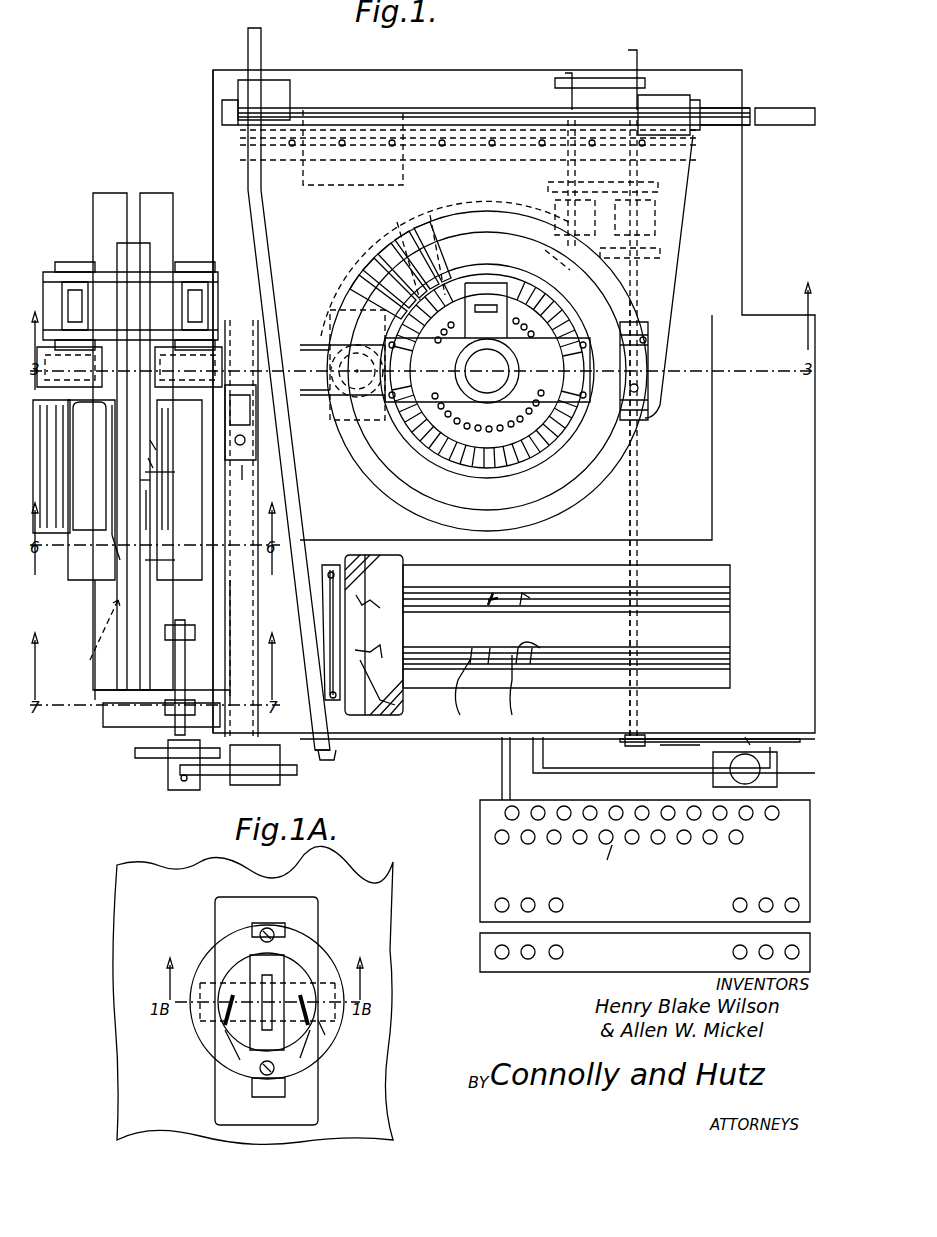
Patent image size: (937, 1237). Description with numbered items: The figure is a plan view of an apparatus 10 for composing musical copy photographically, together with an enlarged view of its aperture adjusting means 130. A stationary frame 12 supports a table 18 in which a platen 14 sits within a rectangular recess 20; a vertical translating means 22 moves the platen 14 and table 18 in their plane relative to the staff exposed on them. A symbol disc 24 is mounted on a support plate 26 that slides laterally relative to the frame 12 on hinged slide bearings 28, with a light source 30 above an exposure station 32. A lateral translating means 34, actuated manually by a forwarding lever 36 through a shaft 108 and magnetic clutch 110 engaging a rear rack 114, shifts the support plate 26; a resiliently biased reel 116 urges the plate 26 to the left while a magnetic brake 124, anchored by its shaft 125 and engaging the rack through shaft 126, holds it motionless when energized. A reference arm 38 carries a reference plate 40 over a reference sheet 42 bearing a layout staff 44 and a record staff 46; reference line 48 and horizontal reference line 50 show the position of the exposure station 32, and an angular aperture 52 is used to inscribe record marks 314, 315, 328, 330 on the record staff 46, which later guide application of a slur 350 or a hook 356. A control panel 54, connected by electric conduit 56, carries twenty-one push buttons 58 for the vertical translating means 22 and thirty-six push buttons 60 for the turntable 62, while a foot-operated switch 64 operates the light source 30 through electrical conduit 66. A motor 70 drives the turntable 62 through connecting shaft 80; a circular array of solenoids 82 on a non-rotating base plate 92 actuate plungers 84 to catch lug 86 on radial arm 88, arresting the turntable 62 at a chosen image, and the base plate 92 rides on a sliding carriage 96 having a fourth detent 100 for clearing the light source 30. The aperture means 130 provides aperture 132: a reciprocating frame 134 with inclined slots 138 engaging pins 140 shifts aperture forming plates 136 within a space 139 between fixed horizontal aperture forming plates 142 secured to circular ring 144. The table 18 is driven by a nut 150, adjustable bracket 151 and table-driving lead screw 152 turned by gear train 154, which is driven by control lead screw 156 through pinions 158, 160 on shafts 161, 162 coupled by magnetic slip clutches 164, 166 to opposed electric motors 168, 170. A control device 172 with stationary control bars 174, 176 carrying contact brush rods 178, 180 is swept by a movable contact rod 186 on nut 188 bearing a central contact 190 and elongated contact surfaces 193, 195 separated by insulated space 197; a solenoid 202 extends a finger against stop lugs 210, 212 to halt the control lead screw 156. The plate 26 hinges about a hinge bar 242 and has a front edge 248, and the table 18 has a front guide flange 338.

In FIG. 1, the apparatus 10 is at (548, 66).
In FIG. 1, the stationary frame 12 is at (228, 214).
In FIG. 1, the platen 14 is at (703, 515).
In FIG. 1, the table 18 is at (602, 737).
In FIG. 1, the rectangular recess 20 is at (710, 455).
In FIG. 1, the vertical translating means 22 is at (112, 595).
In FIG. 1, the symbol disc 24 is at (425, 210).
In FIG. 1, the support plate 26 is at (670, 302).
In FIG. 1, the hinged slide bearings 28 is at (230, 110).
In FIG. 1, the light source 30 is at (338, 445).
In FIG. 1, the exposure station 32 is at (333, 415).
In FIG. 1A, the exposure station 32 is at (209, 934).
In FIG. 1, the lateral translating means 34 is at (640, 95).
In FIG. 1, the forwarding lever 36 is at (780, 745).
In FIG. 1, the reference arm 38 is at (328, 745).
In FIG. 1, the reference plate 40 is at (368, 700).
In FIG. 1, the reference sheet 42 is at (725, 575).
In FIG. 1, the layout staff 44 is at (728, 655).
In FIG. 1, the record staff 46 is at (728, 603).
In FIG. 1, the reference line 48 is at (366, 635).
In FIG. 1, the horizontal reference line 50 is at (392, 685).
In FIG. 1, the angular aperture 52 is at (400, 565).
In FIG. 1, the control panel 54 is at (485, 893).
In FIG. 1, the electric conduit 56 is at (500, 778).
In FIG. 1, the push buttons 58 is at (612, 855).
In FIG. 1, the push buttons 60 is at (570, 910).
In FIG. 1, the turntable 62 is at (531, 360).
In FIG. 1, the foot-operated switch 64 is at (715, 780).
In FIG. 1, the electrical conduit 66 is at (660, 755).
In FIG. 1, the motor 70 is at (460, 360).
In FIG. 1, the connecting shaft 80 is at (455, 300).
In FIG. 1, the solenoids 82 is at (360, 295).
In FIG. 1, the plungers 84 is at (474, 375).
In FIG. 1, the lug 86 is at (480, 270).
In FIG. 1, the radial arm 88 is at (465, 275).
In FIG. 1, the base plate 92 is at (553, 480).
In FIG. 1, the sliding carriage 96 is at (643, 345).
In FIG. 1, the fourth detent 100 is at (640, 388).
In FIG. 1, the shaft 108 is at (638, 503).
In FIG. 1, the magnetic clutch 110 is at (650, 220).
In FIG. 1, the rear rack 114 is at (505, 150).
In FIG. 1, the resiliently biased reel 116 is at (315, 180).
In FIG. 1, the magnetic brake 124 is at (578, 220).
In FIG. 1, the shaft 125 is at (567, 270).
In FIG. 1, the shaft 126 is at (568, 178).
In FIG. 1A, the adjustable aperture means 130 is at (318, 940).
In FIG. 1A, the aperture 132 is at (230, 1010).
In FIG. 1A, the reciprocating frame 134 is at (278, 900).
In FIG. 1A, the aperture forming plates 136 is at (220, 1050).
In FIG. 1A, the inclined slots 138 is at (310, 1060).
In FIG. 1A, the space 139 is at (330, 1030).
In FIG. 1A, the pins 140 is at (186, 974).
In FIG. 1A, the fixed horizontal aperture forming plates 142 is at (273, 965).
In FIG. 1A, the circular ring 144 is at (235, 940).
In FIG. 1, the nut 150 is at (240, 425).
In FIG. 1, the adjustable bracket 151 is at (244, 480).
In FIG. 1, the table-driving lead screw 152 is at (258, 602).
In FIG. 1, the gear train 154 is at (167, 763).
In FIG. 1, the control lead screw 156 is at (86, 639).
In FIG. 1, the pinion 158 is at (200, 268).
In FIG. 1, the pinion 160 is at (62, 265).
In FIG. 1, the shaft 161 is at (200, 308).
In FIG. 1, the shaft 162 is at (88, 306).
In FIG. 1, the magnetic slip clutch 164 is at (213, 364).
In FIG. 1, the magnetic slip clutch 166 is at (69, 367).
In FIG. 1, the electric motor 168 is at (150, 478).
In FIG. 1, the electric motor 170 is at (52, 452).
In FIG. 1, the control device 172 is at (110, 505).
In FIG. 1, the stationary control bar 174 is at (92, 574).
In FIG. 1, the stationary control bar 176 is at (175, 572).
In FIG. 1, the contact brush rods 178 is at (115, 556).
In FIG. 1, the contact brush rods 180 is at (140, 492).
In FIG. 1, the movable contact rod 186 is at (133, 243).
In FIG. 1, the nut 188 is at (150, 512).
In FIG. 1, the central contact 190 is at (112, 460).
In FIG. 1, the elongated contact surface 193 is at (150, 446).
In FIG. 1, the elongated contact surface 195 is at (150, 560).
In FIG. 1, the insulated space 197 is at (152, 470).
In FIG. 1, the solenoid 202 is at (161, 716).
In FIG. 1, the stop lug 210 is at (193, 700).
In FIG. 1, the stop lug 212 is at (186, 647).
In FIG. 1, the hinge bar 242 is at (760, 108).
In FIG. 1, the front edge 248 is at (325, 760).
In FIG. 1, the record mark 314 is at (498, 640).
In FIG. 1, the record mark 315 is at (531, 638).
In FIG. 1, the record mark 328 is at (480, 598).
In FIG. 1, the record mark 330 is at (508, 598).
In FIG. 1, the front guide flange 338 is at (745, 737).
In FIG. 1, the slur 350 is at (525, 689).
In FIG. 1, the hook 356 is at (466, 692).